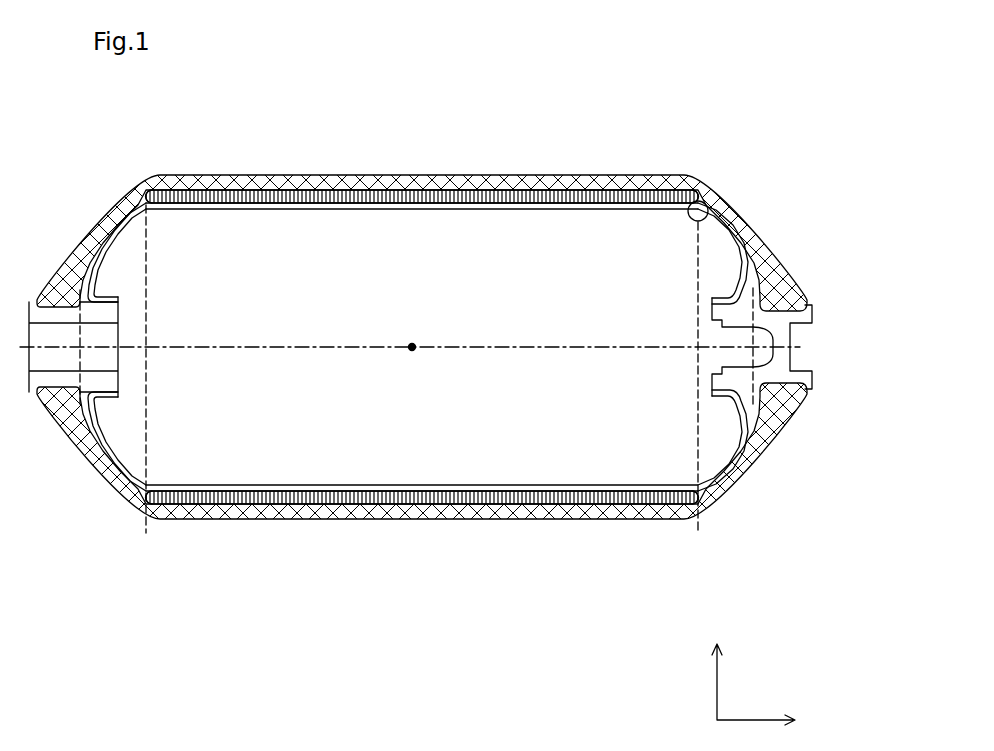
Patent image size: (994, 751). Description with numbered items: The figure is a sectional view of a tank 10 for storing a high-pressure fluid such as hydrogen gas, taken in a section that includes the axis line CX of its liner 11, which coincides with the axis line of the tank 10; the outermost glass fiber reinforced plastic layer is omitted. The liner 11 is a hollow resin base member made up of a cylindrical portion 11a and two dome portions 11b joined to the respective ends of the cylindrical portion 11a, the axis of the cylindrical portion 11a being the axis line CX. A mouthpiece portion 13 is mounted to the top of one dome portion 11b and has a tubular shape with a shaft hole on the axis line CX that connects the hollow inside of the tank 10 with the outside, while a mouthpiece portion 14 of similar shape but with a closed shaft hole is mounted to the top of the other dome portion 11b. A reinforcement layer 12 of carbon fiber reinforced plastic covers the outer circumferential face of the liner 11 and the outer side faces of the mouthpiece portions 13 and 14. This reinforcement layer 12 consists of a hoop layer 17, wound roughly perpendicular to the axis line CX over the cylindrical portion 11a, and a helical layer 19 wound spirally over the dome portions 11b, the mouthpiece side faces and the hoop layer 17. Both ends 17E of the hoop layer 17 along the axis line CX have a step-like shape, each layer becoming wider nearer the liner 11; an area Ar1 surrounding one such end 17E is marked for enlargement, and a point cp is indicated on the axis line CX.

The tank 10 is at (697, 88).
The liner 11 is at (732, 578).
The cylindrical portion 11a is at (698, 520).
The dome portion 11b is at (752, 520).
The reinforcement layer 12 is at (424, 123).
The mouthpiece portion 13 is at (47, 322).
The mouthpiece portion 14 is at (777, 322).
The hoop layer 17 is at (425, 192).
The end of hoop layer 17E is at (156, 183).
The helical layer 19 is at (367, 175).
The area Ar1 is at (730, 185).
The center point cp is at (410, 343).
The axis line CX is at (428, 349).